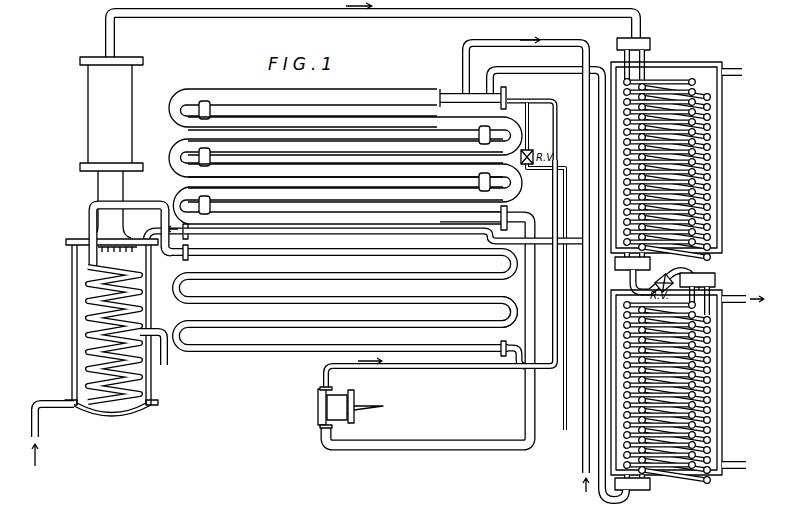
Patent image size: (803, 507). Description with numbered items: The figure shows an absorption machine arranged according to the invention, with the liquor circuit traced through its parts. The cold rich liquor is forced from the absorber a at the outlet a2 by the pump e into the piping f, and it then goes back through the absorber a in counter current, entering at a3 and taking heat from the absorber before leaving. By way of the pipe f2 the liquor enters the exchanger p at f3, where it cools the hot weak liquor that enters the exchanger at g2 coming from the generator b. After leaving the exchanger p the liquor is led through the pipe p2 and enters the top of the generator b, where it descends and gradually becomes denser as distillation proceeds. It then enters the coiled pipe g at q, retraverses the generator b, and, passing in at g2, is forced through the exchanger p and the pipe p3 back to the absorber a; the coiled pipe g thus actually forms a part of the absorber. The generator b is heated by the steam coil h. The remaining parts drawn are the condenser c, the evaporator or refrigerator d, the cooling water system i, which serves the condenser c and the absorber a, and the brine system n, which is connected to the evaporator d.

The absorber a is at (233, 97).
The absorber outlet a2 is at (510, 204).
The absorber inlet a3 is at (530, 170).
The generator b is at (111, 327).
The condenser c is at (700, 228).
The evaporator d is at (700, 440).
The pump e is at (343, 396).
The piping f is at (402, 369).
The pipe f2 is at (545, 110).
The exchanger inlet f3 is at (492, 357).
The coiled pipe g is at (134, 299).
The exchanger inlet for weak liquor g2 is at (134, 243).
The steam coil h is at (148, 386).
The cooling water system i is at (462, 62).
The brine system n is at (722, 300).
The exchanger p is at (263, 350).
The pipe p2 is at (208, 236).
The pipe p3 is at (516, 297).
The pipe inlet q is at (90, 397).